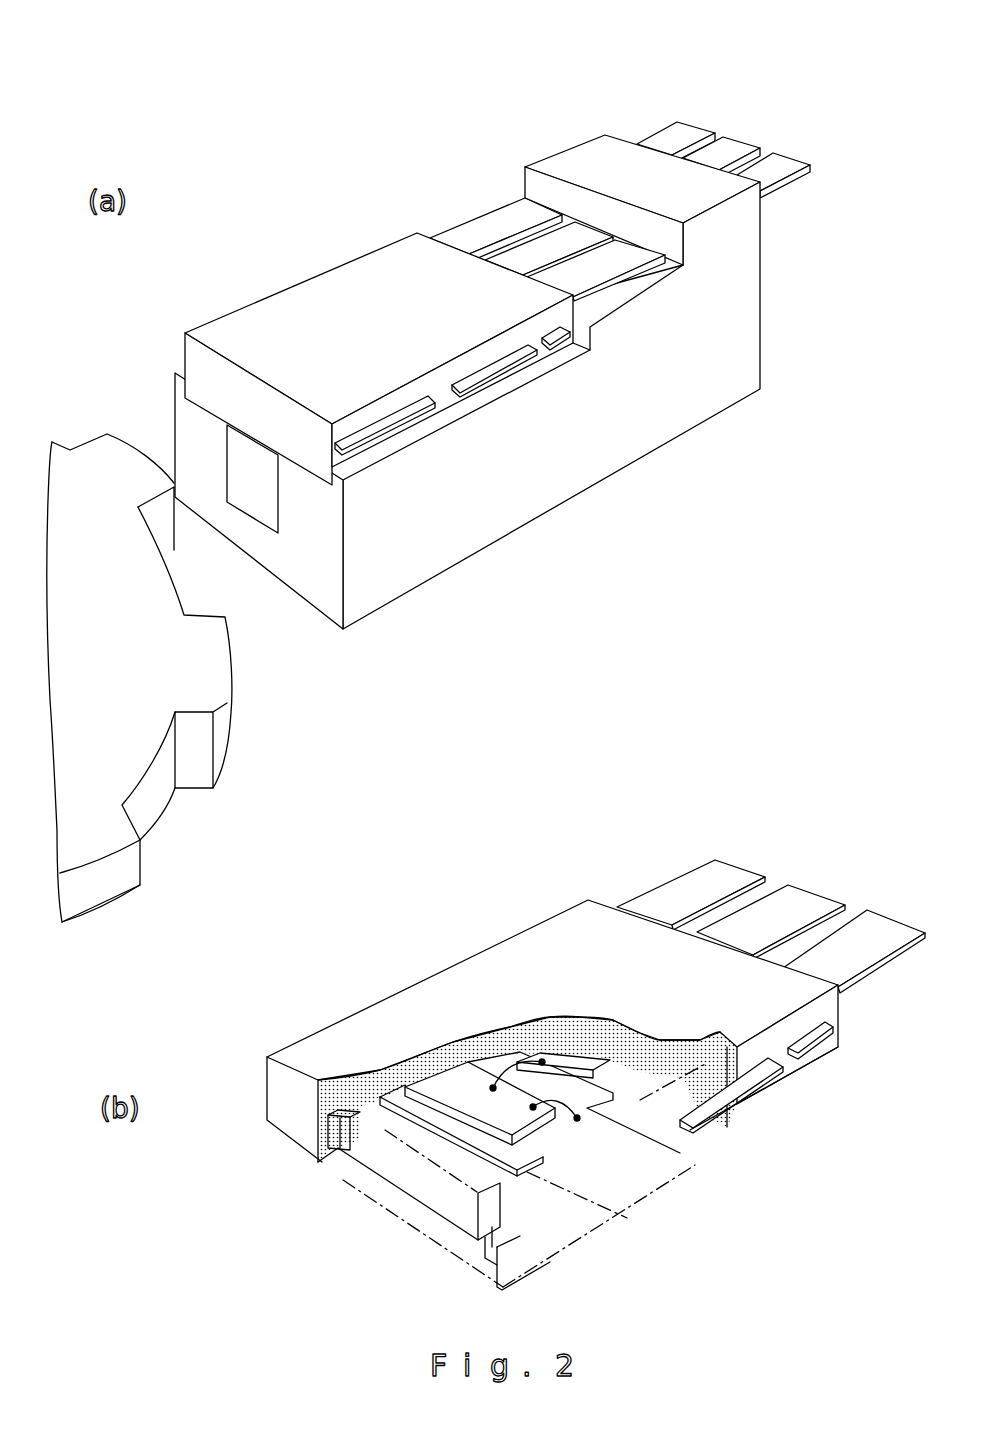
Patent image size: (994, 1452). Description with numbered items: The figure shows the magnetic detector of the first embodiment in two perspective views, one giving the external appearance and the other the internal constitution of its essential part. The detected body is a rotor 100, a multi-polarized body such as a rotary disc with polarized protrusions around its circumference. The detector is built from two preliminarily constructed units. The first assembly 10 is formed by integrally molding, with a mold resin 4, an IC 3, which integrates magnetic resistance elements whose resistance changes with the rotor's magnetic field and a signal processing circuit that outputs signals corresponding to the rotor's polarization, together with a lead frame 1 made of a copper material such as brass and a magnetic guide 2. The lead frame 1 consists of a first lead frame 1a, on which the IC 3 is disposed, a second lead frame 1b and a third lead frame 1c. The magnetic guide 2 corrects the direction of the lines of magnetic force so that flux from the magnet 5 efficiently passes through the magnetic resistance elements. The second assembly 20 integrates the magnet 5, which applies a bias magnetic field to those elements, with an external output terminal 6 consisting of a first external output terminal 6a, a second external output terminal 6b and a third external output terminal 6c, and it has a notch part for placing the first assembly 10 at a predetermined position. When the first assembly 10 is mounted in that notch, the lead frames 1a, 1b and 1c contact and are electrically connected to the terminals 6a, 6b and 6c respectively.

The lead frame 1 is at (563, 42).
The first lead frame 1a is at (627, 250).
The second lead frame 1b is at (580, 230).
The third lead frame 1c is at (507, 220).
The magnetic guide 2 is at (472, 1258).
The IC 3 is at (448, 1085).
The mold resin 4 is at (707, 1038).
The magnet 5 is at (255, 497).
The external output terminal 6 is at (720, 42).
The first external output terminal 6a is at (793, 165).
The second external output terminal 6b is at (738, 152).
The third external output terminal 6c is at (683, 135).
The first assembly 10 is at (340, 282).
The second assembly 20 is at (553, 480).
The rotor 100 is at (150, 807).